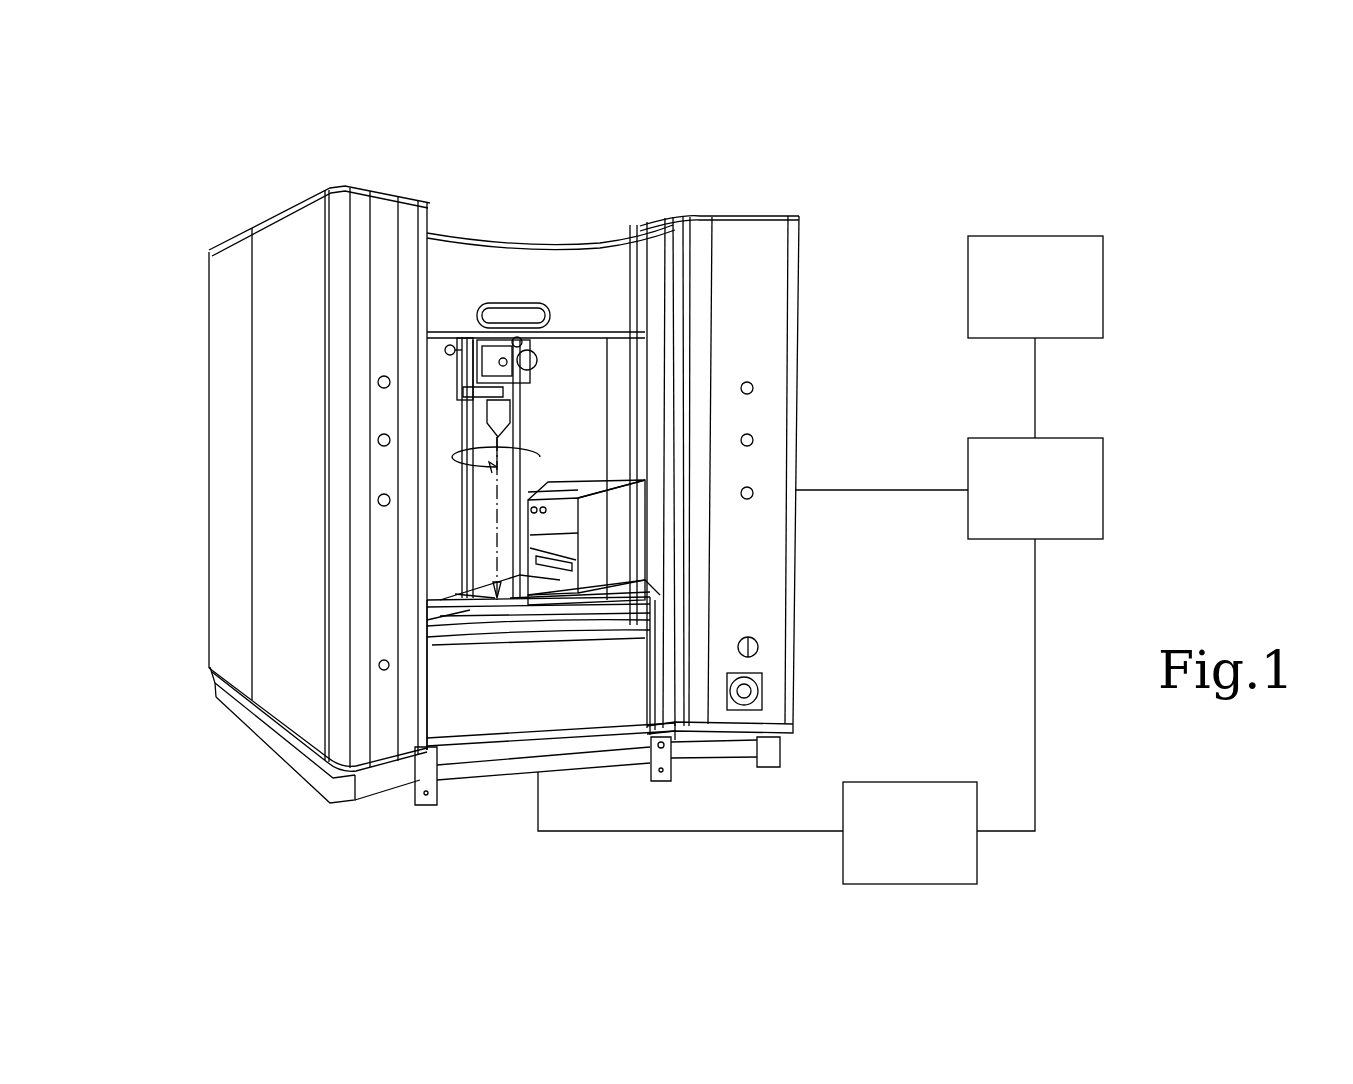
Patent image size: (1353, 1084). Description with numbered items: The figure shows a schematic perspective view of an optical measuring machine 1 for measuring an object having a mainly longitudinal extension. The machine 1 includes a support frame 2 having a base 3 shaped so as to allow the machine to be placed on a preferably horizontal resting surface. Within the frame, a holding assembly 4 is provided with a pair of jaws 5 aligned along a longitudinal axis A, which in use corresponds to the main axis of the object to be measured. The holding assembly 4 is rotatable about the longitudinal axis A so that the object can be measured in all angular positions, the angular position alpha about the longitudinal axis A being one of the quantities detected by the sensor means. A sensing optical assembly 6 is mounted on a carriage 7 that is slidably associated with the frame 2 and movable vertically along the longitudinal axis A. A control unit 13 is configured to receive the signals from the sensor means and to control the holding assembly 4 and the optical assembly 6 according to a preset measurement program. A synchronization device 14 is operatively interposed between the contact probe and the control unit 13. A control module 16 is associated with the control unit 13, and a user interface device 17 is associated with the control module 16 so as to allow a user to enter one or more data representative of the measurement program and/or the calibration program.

The optical measuring machine 1 is at (220, 200).
The support frame 2 is at (279, 755).
The base 3 is at (490, 700).
The holding assembly 4 is at (511, 409).
The jaws 5 is at (468, 335).
The sensing optical assembly 6 is at (610, 475).
The carriage 7 is at (527, 545).
The control unit 13 is at (949, 634).
The synchronization device 14 is at (757, 828).
The control module 16 is at (1103, 287).
The user interface device 17 is at (1035, 337).
The longitudinal axis A is at (445, 500).
The angular position alpha is at (536, 457).